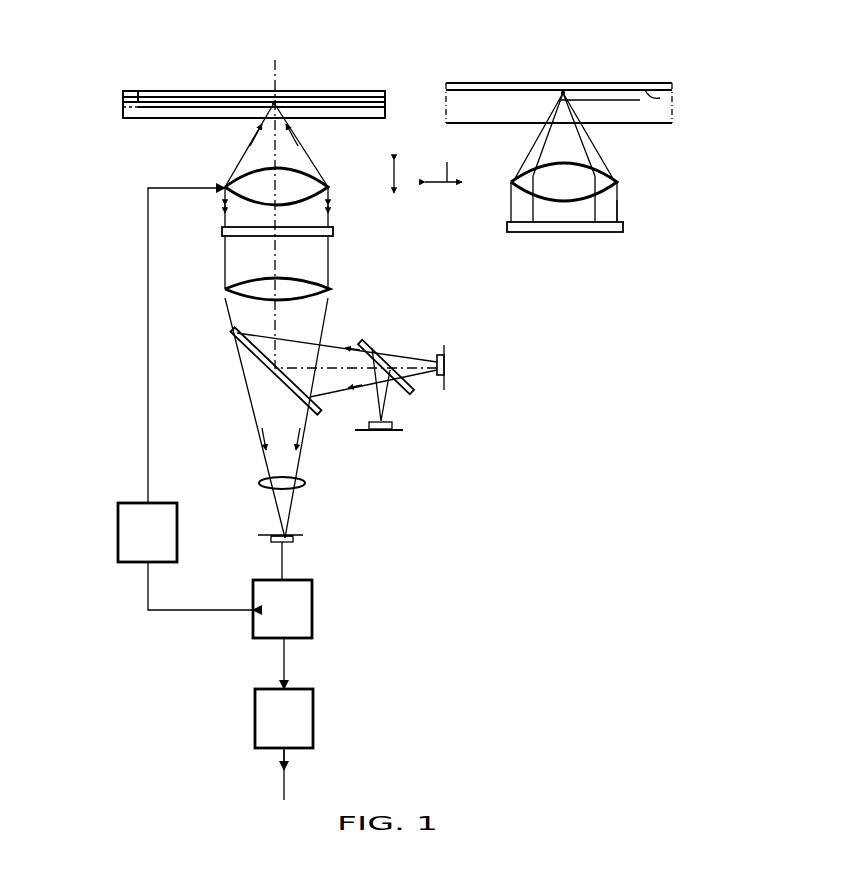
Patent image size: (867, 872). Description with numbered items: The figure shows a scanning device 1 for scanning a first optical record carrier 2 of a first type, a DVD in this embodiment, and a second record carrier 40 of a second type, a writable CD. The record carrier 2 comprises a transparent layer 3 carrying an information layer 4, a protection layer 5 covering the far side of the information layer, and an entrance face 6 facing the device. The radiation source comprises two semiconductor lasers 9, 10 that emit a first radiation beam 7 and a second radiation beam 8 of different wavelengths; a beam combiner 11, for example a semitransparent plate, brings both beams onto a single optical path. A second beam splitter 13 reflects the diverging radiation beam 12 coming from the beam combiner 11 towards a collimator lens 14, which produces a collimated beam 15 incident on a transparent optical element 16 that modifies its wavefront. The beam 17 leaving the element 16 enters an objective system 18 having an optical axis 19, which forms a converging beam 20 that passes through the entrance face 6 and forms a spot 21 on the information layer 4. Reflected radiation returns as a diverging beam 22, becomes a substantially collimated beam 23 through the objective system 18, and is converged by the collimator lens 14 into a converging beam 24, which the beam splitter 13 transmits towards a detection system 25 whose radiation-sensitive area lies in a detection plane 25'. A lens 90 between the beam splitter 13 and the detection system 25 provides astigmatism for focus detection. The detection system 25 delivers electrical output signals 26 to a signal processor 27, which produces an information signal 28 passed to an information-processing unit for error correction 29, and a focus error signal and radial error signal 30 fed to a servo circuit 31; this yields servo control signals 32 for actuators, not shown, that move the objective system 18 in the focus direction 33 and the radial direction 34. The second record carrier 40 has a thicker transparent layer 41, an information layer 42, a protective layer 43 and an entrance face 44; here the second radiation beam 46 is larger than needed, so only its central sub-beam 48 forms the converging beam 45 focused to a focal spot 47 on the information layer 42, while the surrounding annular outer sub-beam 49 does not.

The scanning device 1 is at (80, 298).
The first optical record carrier 2 is at (104, 25).
The transparent layer 3 is at (127, 115).
The information layer 4 is at (137, 93).
The protection layer 5 is at (165, 97).
The entrance face 6 is at (140, 120).
The first radiation beam 7 is at (377, 404).
The second radiation beam 8 is at (413, 361).
The semiconductor laser 9 is at (365, 433).
The semiconductor laser 10 is at (446, 363).
The beam combiner 11 is at (372, 343).
The diverging radiation beam 12 is at (330, 345).
The second beam splitter 13 is at (233, 334).
The collimator lens 14 is at (228, 295).
The collimated beam 15 is at (222, 263).
The transparent optical element 16 is at (220, 232).
The beam 17 is at (220, 202).
The objective system 18 is at (225, 187).
The optical axis 19 is at (277, 71).
The converging beam 20 is at (257, 135).
The spot 21 is at (274, 103).
The diverging beam 22 is at (305, 152).
The substantially collimated beam 23 is at (335, 212).
The converging beam 24 is at (327, 308).
The detection system 25 is at (305, 546).
The detection plane 25' is at (310, 522).
The electrical output signals 26 is at (277, 560).
The signal processor 27 is at (267, 578).
The information signal 28 is at (280, 669).
The information-processing unit for error correction 29 is at (268, 689).
The focus error signal and radial error signal 30 is at (172, 613).
The servo circuit 31 is at (133, 503).
The servo control signals 32 is at (146, 393).
The focus direction 33 is at (395, 172).
The radial direction 34 is at (443, 159).
The second record carrier 40 is at (682, 42).
The transparent layer 41 is at (650, 112).
The information layer 42 is at (657, 98).
The protective layer 43 is at (616, 85).
The entrance face 44 is at (643, 125).
The converging beam 45 is at (590, 147).
The second radiation beam 46 is at (618, 205).
The focal spot 47 is at (563, 93).
The central sub-beam 48 is at (585, 215).
The outer sub-beam 49 is at (522, 207).
The lens 90 is at (305, 485).